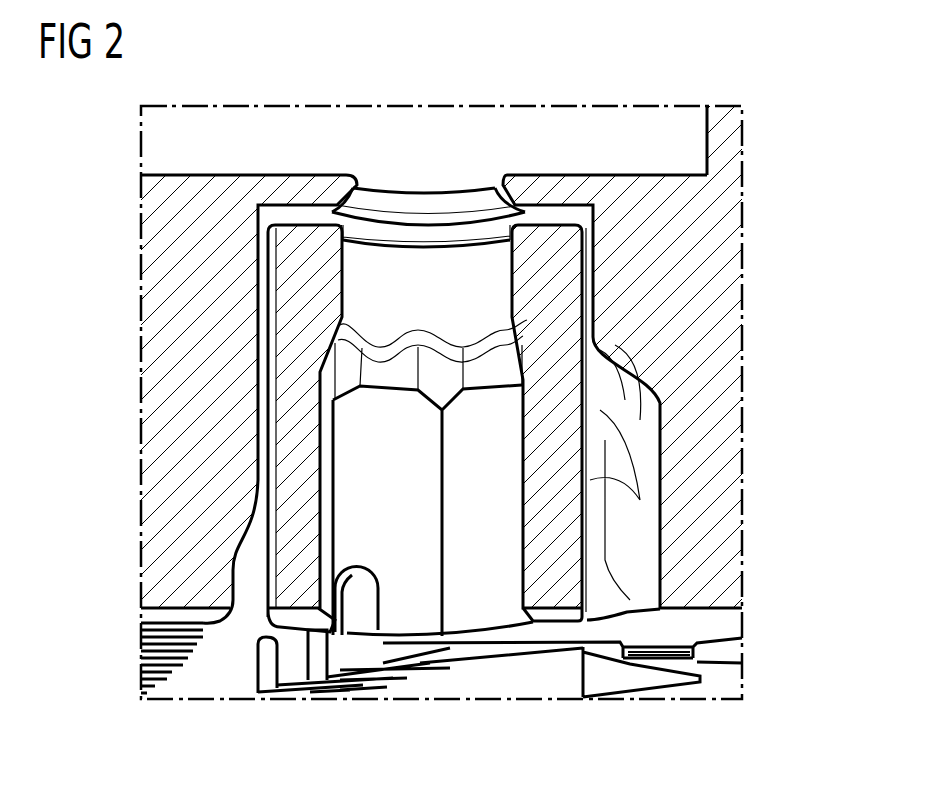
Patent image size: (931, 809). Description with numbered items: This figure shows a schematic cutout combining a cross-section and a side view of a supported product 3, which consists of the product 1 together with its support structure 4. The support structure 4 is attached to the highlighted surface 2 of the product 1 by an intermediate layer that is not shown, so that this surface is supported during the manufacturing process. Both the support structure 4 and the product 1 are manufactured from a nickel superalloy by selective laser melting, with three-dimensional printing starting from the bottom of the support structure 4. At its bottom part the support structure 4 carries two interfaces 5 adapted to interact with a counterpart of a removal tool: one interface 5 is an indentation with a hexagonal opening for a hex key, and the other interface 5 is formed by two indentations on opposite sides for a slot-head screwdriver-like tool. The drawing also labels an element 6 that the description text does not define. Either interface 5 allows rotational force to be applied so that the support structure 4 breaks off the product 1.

The product 1 is at (733, 323).
The highlighted surface 2 is at (552, 213).
The supported product 3 is at (110, 332).
The support structure 4 is at (570, 463).
The interfaces 5 is at (362, 622).
The hexagonal bolt 6 is at (486, 608).